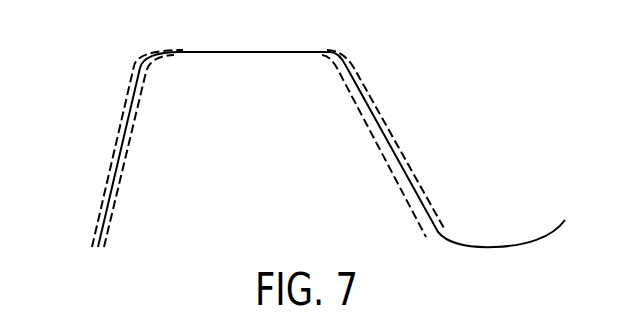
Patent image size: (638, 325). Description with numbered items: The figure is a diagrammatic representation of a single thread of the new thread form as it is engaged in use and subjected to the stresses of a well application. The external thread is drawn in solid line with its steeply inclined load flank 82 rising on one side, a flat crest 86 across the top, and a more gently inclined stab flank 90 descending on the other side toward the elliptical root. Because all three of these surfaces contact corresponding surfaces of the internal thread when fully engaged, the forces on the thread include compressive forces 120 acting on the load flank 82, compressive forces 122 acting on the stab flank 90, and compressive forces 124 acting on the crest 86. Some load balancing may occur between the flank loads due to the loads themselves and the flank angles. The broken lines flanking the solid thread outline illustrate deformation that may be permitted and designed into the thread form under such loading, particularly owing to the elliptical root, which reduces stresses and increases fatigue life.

The load flank 82 is at (118, 168).
The compressive forces 120 is at (110, 147).
The compressive forces 124 is at (237, 50).
The crest 86 is at (252, 52).
The stab flank 90 is at (393, 150).
The compressive forces 122 is at (397, 122).